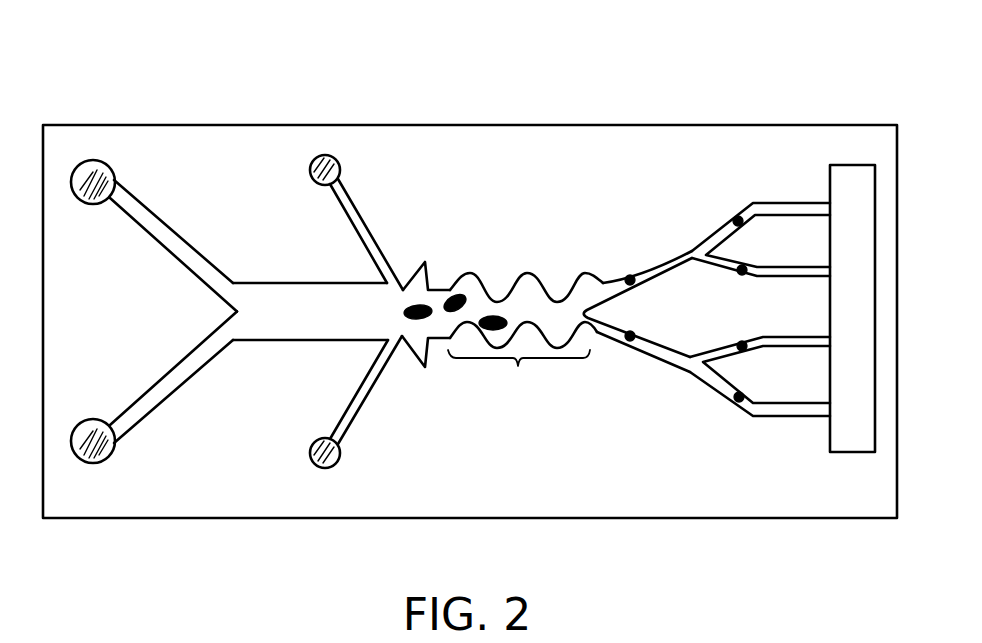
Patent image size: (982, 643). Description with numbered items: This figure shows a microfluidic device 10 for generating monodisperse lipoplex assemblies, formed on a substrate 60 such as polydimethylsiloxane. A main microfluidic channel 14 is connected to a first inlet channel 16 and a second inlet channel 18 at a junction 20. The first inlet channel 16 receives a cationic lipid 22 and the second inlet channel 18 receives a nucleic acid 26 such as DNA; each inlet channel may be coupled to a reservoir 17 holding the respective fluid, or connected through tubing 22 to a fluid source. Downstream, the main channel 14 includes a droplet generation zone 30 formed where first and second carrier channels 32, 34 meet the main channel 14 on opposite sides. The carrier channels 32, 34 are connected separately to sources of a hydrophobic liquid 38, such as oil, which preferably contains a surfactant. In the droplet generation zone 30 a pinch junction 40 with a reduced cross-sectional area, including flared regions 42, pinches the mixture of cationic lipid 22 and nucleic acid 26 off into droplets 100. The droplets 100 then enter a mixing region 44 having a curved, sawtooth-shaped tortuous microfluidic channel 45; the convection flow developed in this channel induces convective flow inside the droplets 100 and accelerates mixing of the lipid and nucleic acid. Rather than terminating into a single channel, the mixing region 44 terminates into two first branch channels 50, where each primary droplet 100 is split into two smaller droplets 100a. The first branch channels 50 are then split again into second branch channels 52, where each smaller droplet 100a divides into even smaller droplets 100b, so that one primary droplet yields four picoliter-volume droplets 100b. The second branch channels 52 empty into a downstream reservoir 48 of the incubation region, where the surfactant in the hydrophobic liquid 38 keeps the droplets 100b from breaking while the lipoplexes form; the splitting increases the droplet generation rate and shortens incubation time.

The microfluidic device 10 is at (590, 66).
The main microfluidic channel 14 is at (294, 283).
The first inlet channel 16 is at (170, 228).
The reservoir 17 is at (92, 205).
The second inlet channel 18 is at (160, 380).
The junction 20 is at (236, 312).
The cationic lipid 22 is at (92, 160).
The nucleic acid 26 is at (90, 426).
The droplet generation zone 30 is at (370, 356).
The first carrier channel 32 is at (348, 195).
The second carrier channel 34 is at (370, 393).
The hydrophobic liquid 38 is at (325, 155).
The pinch junction 40 is at (406, 274).
The flared regions 42 is at (459, 246).
The mixing region 44 is at (522, 360).
The tortuous microfluidic channel 45 is at (528, 272).
The reservoir 48 is at (840, 266).
The first branch channels 50 is at (667, 258).
The second branch channels 52 is at (798, 203).
The substrate 60 is at (656, 126).
The droplets 100 is at (494, 316).
The smaller droplets 100a is at (627, 276).
The even smaller droplets 100b is at (736, 216).